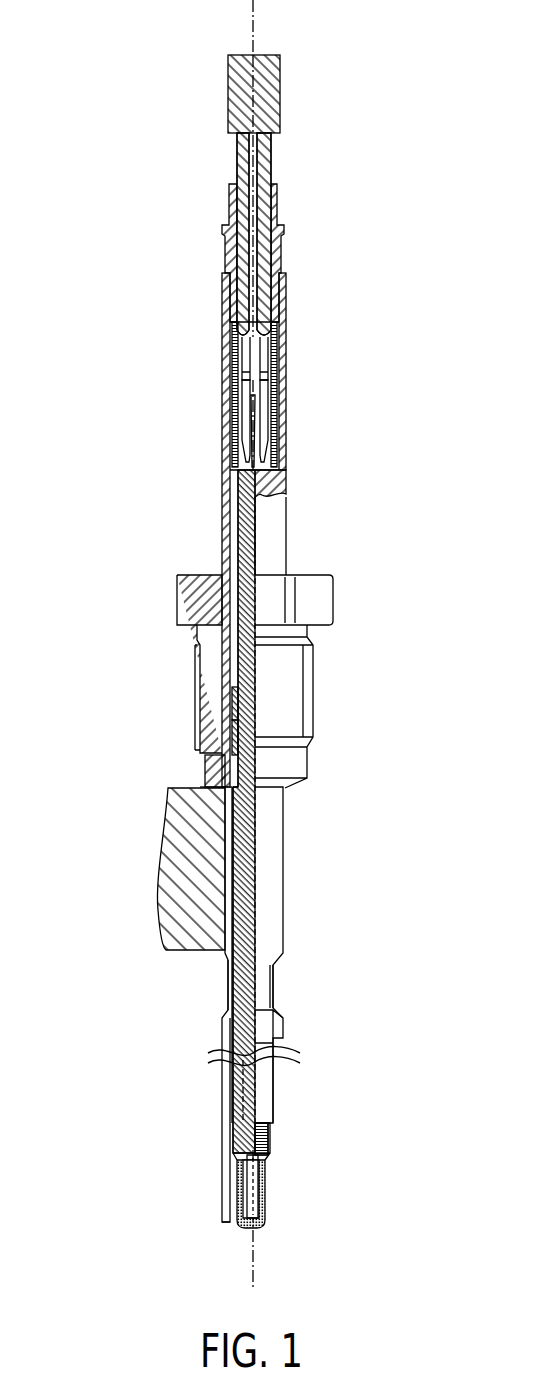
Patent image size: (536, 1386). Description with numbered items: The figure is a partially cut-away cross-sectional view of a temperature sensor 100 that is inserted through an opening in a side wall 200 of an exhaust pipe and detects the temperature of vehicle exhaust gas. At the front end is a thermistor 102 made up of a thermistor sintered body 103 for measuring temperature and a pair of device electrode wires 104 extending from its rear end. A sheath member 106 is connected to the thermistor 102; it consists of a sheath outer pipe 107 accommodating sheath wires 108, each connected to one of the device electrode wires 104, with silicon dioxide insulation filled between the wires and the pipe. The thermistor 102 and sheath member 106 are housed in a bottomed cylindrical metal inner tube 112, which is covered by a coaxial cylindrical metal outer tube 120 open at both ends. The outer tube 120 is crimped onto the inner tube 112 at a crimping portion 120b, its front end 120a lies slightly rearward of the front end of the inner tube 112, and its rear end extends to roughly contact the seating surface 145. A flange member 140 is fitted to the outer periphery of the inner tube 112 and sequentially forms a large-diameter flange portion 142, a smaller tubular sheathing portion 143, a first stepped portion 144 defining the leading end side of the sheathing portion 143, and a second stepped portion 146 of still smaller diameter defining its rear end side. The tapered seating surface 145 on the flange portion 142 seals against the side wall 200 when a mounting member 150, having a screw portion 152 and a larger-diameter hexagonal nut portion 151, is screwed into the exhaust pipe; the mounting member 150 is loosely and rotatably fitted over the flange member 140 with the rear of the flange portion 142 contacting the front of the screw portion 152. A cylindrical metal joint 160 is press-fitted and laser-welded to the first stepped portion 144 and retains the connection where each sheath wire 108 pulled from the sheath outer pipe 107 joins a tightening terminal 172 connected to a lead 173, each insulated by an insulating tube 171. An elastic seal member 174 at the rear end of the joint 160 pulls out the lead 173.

The temperature sensor 100 is at (110, 140).
The thermistor 102 is at (309, 1202).
The thermistor sintered body 103 is at (268, 1225).
The device electrode wires 104 is at (268, 1213).
The sheath member 106 is at (245, 1088).
The sheath outer pipe 107 is at (237, 870).
The sheath wire 108 is at (243, 442).
The inner tube 112 is at (268, 1083).
The outer tube 120 is at (268, 888).
The front end of outer tube 120a is at (223, 1222).
The crimping portion 120b is at (228, 985).
The flange member 140 is at (146, 748).
The flange portion 142 is at (222, 777).
The sheathing portion 143 is at (174, 716).
The first stepped portion 144 is at (233, 750).
The seating surface 145 is at (182, 802).
The second stepped portion 146 is at (235, 710).
The mounting member 150 is at (307, 681).
The hexagonal nut portion 151 is at (313, 602).
The screw portion 152 is at (293, 706).
The joint 160 is at (223, 517).
The insulating tube 171 is at (257, 428).
The tightening terminal 172 is at (239, 380).
The lead 173 is at (237, 157).
The elastic seal member 174 is at (277, 201).
The side wall 200 is at (187, 863).